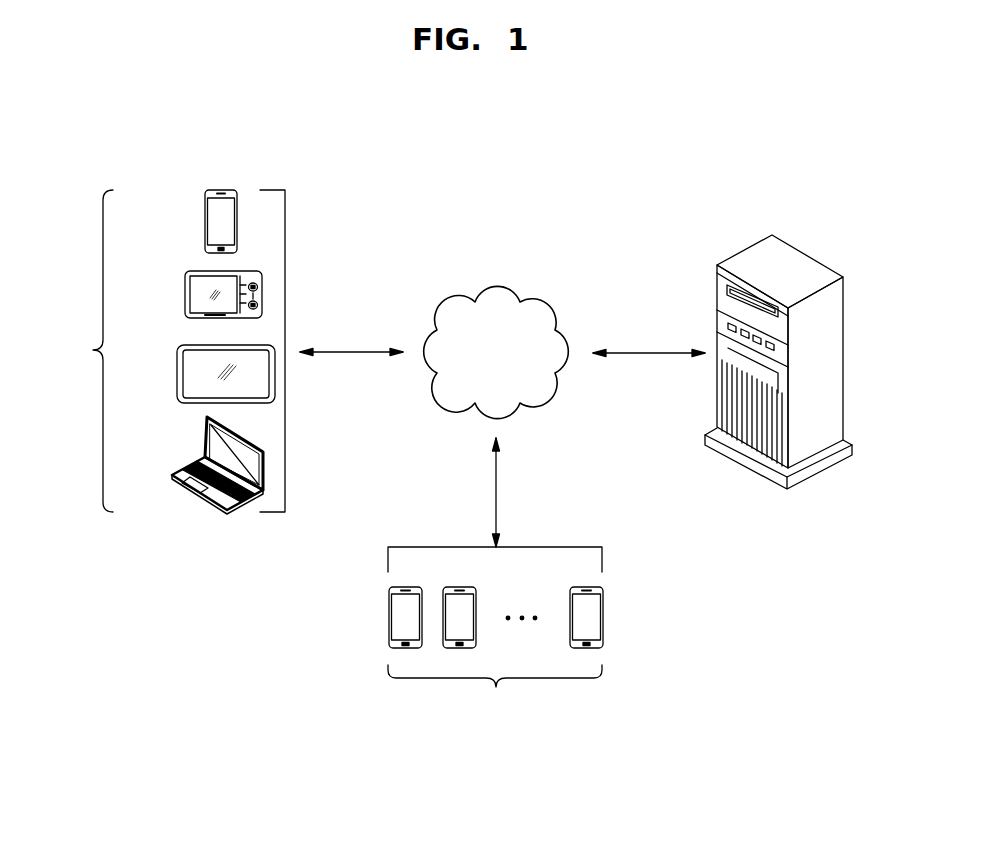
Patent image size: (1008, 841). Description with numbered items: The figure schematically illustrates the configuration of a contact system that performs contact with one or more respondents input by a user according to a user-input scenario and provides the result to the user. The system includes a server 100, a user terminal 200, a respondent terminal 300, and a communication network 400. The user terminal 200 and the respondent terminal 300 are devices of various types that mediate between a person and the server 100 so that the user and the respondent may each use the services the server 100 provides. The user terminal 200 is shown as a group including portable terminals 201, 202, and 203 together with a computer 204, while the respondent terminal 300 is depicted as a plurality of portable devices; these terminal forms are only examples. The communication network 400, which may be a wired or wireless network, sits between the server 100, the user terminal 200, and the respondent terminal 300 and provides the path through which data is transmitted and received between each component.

The server 100 is at (807, 253).
The user terminal 200 is at (167, 351).
The portable terminal 201 is at (205, 220).
The portable terminal 202 is at (185, 297).
The portable terminal 203 is at (177, 373).
The computer 204 is at (205, 437).
The respondent terminal 300 is at (495, 633).
The communication network 400 is at (497, 288).